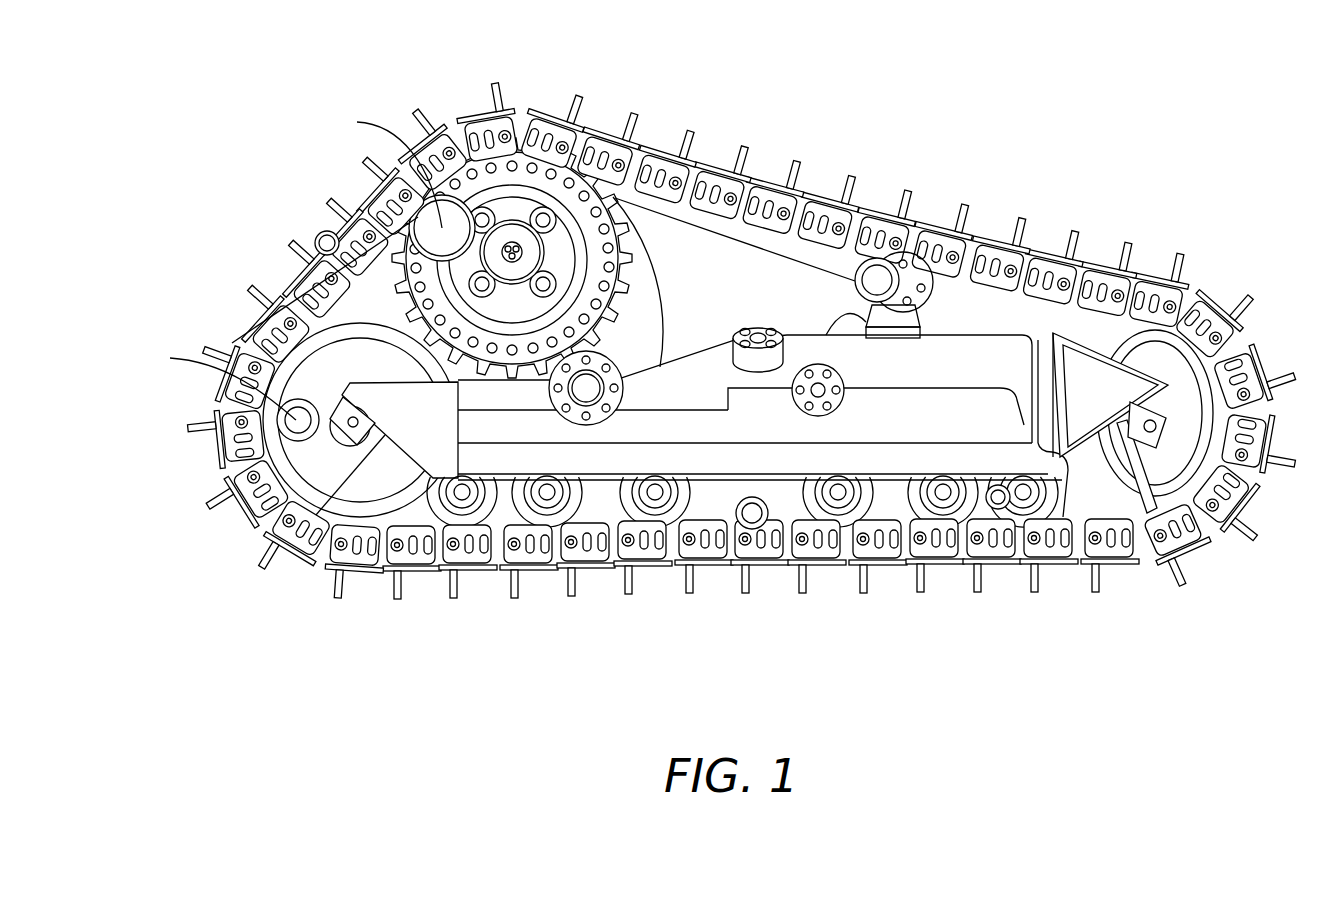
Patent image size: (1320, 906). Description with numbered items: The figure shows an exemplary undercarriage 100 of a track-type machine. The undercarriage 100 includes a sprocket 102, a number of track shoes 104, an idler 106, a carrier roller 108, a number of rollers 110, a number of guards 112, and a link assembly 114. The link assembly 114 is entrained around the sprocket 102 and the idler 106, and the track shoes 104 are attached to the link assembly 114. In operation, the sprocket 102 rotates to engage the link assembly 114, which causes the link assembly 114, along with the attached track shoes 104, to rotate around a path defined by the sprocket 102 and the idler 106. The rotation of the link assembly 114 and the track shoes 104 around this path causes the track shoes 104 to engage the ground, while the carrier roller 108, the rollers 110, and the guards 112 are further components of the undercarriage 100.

The undercarriage 100 is at (1096, 99).
The sprocket 102 is at (490, 244).
The track shoes 104 is at (327, 243).
The idler 106 is at (293, 420).
The carrier roller 108 is at (877, 282).
The rollers 110 is at (1002, 505).
The guards 112 is at (764, 522).
The link assembly 114 is at (793, 210).